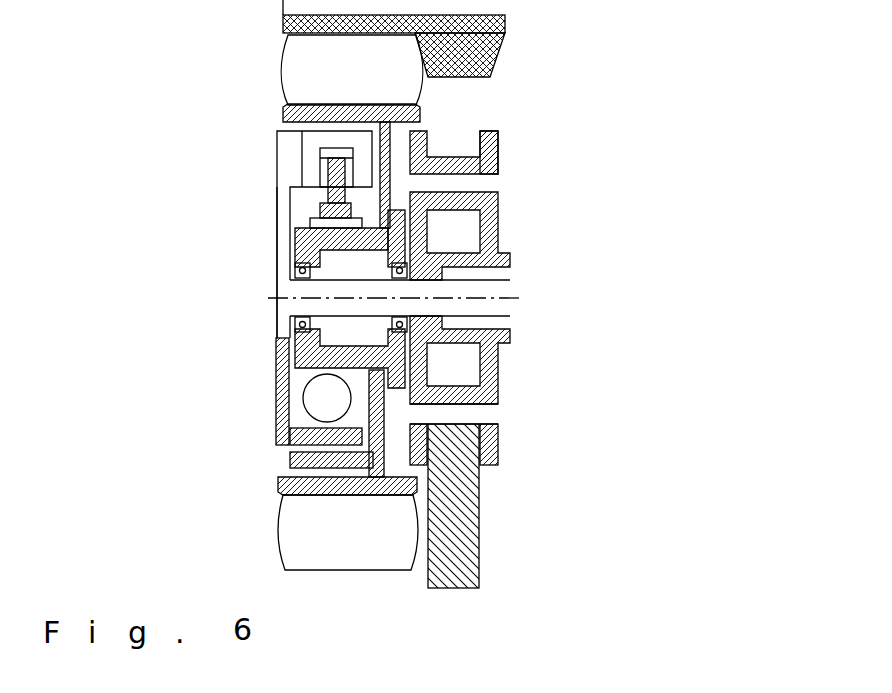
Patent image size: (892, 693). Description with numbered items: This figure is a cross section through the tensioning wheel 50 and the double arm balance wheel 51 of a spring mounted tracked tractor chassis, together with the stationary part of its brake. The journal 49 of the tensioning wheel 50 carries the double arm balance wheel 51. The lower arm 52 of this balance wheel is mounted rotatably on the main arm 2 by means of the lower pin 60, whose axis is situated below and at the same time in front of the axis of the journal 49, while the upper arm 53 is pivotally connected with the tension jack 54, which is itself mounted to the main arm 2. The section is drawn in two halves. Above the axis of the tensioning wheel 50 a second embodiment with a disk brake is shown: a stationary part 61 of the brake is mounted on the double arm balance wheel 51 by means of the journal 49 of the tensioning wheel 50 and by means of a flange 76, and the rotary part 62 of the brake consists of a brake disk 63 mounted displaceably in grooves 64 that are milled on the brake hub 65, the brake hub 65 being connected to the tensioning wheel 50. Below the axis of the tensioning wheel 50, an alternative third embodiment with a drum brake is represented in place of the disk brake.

The main arm 2 is at (442, 573).
The journal 49 is at (487, 305).
The tensioning wheel 50 is at (315, 60).
The double arm balance wheel 51 is at (603, 438).
The lower arm 52 is at (487, 433).
The upper arm 53 is at (630, 243).
The tension jack 54 is at (455, 160).
The lower pin 60 is at (487, 415).
The stationary part of the brake 61 is at (308, 148).
The rotary part of the brake 62 is at (197, 310).
The brake disk 63 is at (332, 167).
The grooves 64 is at (313, 280).
The brake hub 65 is at (297, 242).
The flange 76 is at (282, 227).